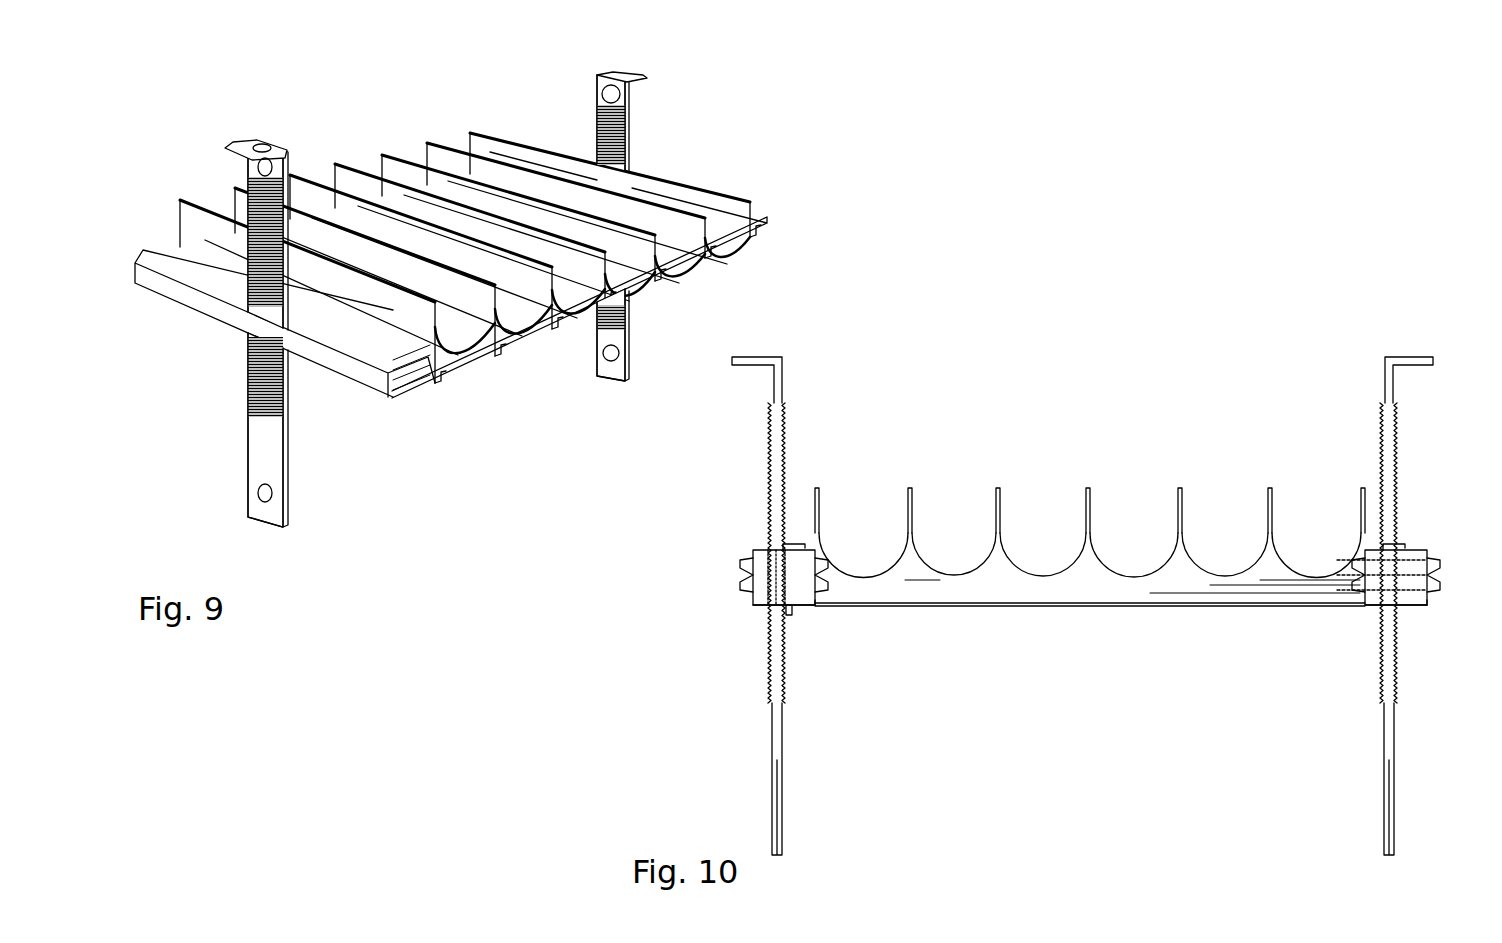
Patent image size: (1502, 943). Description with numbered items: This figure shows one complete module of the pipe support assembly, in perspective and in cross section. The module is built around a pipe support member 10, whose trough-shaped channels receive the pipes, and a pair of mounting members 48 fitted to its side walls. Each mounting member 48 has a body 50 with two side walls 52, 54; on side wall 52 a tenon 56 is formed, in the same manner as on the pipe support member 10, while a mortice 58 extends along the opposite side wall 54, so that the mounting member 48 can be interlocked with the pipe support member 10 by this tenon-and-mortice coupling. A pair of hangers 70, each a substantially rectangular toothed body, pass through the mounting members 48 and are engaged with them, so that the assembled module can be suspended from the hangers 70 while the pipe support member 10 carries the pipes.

In FIG. 10, the pipe support member 10 is at (1030, 603).
In FIG. 10, the mounting member 48 is at (753, 604).
In FIG. 10, the body 50 is at (812, 548).
In FIG. 10, the side wall 52 is at (753, 548).
In FIG. 10, the side wall 54 is at (818, 604).
In FIG. 10, the tenon 56 is at (740, 577).
In FIG. 10, the mortice 58 is at (1422, 577).
In FIG. 9, the hanger 70 is at (632, 108).
In FIG. 10, the hanger 70 is at (783, 377).